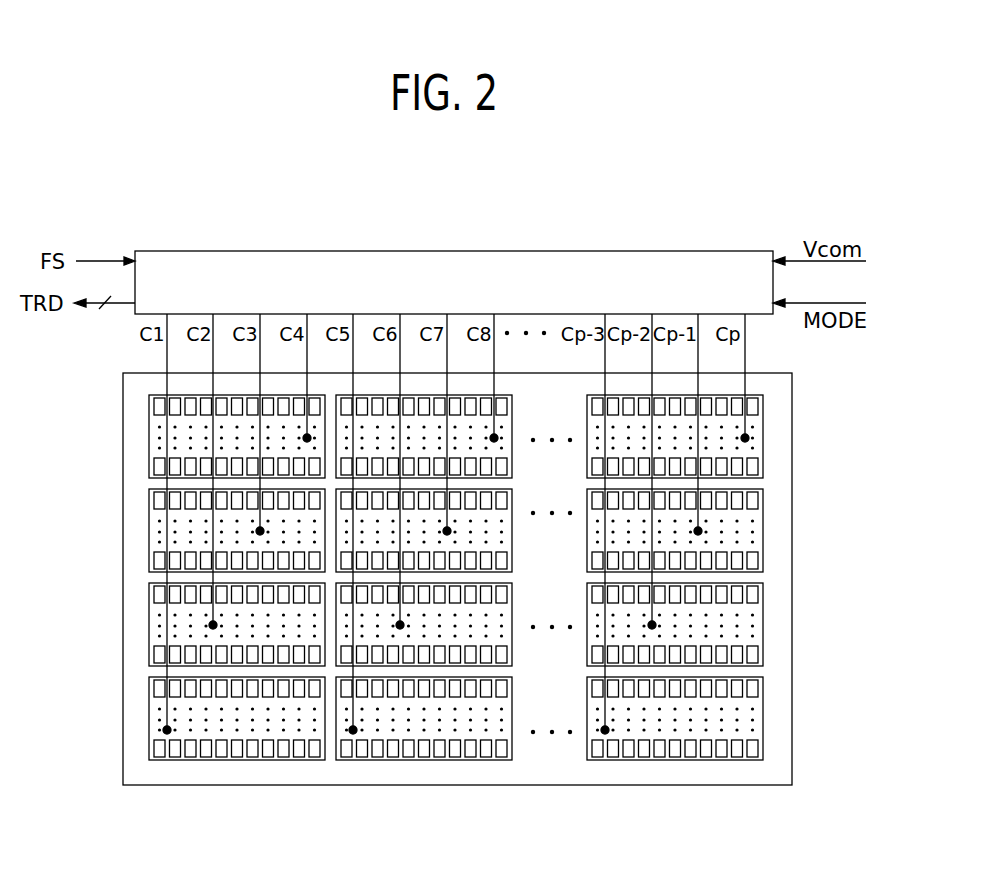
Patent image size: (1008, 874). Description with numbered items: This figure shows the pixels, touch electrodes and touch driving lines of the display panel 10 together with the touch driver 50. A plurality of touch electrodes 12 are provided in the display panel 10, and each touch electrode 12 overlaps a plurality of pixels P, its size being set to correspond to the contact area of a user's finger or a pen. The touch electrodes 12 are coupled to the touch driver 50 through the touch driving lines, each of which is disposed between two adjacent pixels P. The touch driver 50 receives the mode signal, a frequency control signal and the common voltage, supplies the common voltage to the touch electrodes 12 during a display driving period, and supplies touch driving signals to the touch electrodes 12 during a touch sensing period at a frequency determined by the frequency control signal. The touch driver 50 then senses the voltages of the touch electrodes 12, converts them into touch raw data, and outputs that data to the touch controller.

The touch driver 50 is at (648, 251).
The display panel 10 is at (475, 579).
The touch electrode 12 is at (763, 427).
The pixel P is at (154, 408).